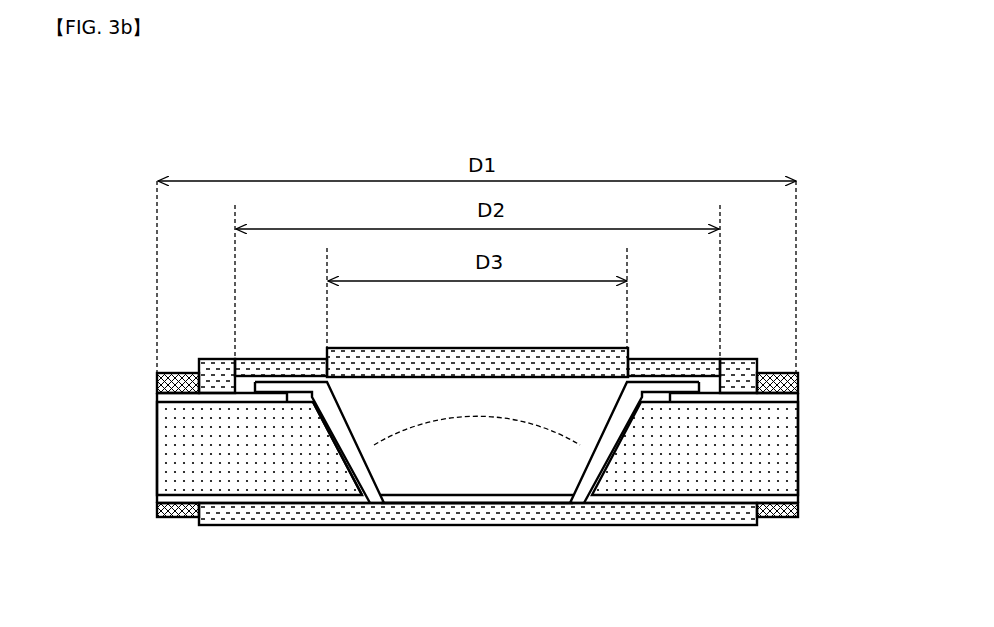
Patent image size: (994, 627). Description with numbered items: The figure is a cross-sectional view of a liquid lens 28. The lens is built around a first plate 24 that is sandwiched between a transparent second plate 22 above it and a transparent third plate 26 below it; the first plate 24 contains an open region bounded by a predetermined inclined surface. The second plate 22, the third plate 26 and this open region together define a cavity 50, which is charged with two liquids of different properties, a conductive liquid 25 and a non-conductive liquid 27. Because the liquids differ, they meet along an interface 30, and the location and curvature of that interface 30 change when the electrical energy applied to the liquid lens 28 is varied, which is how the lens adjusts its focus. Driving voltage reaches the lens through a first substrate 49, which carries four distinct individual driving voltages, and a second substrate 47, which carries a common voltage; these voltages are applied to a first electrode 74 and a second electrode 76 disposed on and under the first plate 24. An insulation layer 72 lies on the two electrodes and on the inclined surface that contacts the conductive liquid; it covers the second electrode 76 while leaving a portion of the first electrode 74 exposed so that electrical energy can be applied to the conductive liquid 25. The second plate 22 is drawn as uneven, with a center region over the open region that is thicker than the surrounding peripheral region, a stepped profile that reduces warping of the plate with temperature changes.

The second plate 22 is at (481, 348).
The first plate 24 is at (800, 450).
The conductive liquid 25 is at (437, 397).
The third plate 26 is at (481, 532).
The non-conductive liquid 27 is at (445, 472).
The liquid lens 28 is at (892, 256).
The interface 30 is at (525, 418).
The second substrate 47 is at (779, 372).
The first substrate 49 is at (777, 524).
The cavity 50 is at (543, 498).
The insulation layer 72 is at (383, 506).
The first electrode 74 is at (801, 395).
The second electrode 76 is at (801, 500).